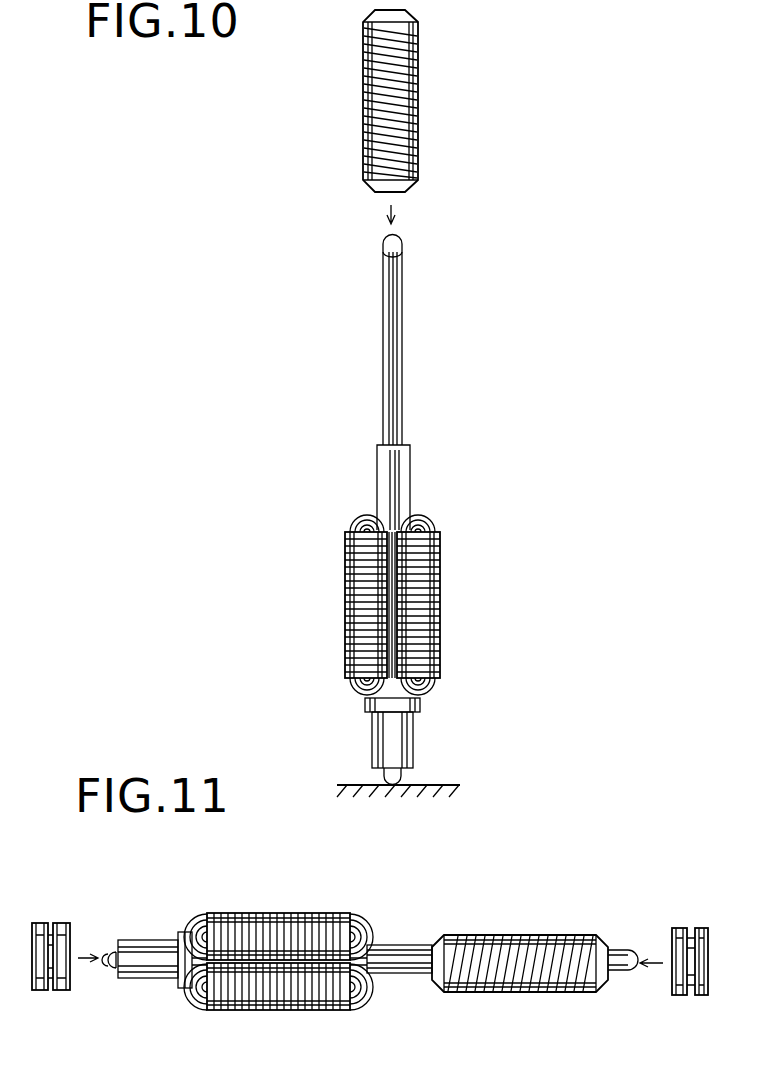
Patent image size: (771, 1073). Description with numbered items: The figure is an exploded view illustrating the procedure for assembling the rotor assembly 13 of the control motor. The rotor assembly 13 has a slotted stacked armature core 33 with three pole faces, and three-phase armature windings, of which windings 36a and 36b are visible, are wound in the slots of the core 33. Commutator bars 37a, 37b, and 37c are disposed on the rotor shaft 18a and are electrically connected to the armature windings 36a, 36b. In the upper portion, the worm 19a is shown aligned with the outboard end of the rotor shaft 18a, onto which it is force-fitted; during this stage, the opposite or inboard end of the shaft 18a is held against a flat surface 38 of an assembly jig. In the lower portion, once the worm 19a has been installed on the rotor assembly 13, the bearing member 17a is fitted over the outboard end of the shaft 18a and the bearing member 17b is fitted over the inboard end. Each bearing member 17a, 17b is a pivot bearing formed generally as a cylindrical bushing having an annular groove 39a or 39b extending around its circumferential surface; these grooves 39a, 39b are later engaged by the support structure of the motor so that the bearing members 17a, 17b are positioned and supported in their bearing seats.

In FIG. 10, the worm 19a is at (420, 92).
In FIG. 11, the worm 19a is at (520, 963).
In FIG. 10, the rotor shaft 18a is at (400, 345).
In FIG. 11, the rotor shaft 18a is at (623, 960).
In FIG. 10, the rotor assembly 13 is at (428, 496).
In FIG. 11, the rotor assembly 13 is at (412, 928).
In FIG. 10, the armature winding 36a is at (432, 520).
In FIG. 11, the armature winding 36a is at (362, 930).
In FIG. 10, the armature winding 36b is at (352, 520).
In FIG. 11, the armature winding 36b is at (362, 1003).
In FIG. 10, the armature core 33 is at (392, 613).
In FIG. 11, the armature core 33 is at (268, 913).
In FIG. 10, the commutator bar 37a is at (410, 725).
In FIG. 11, the commutator bar 37a is at (132, 978).
In FIG. 10, the commutator bar 37b is at (395, 757).
In FIG. 11, the commutator bar 37b is at (133, 958).
In FIG. 10, the commutator bar 37c is at (372, 725).
In FIG. 11, the commutator bar 37c is at (156, 940).
In FIG. 10, the flat surface 38 is at (360, 785).
In FIG. 11, the bearing member 17a is at (676, 935).
In FIG. 11, the bearing member 17b is at (62, 925).
In FIG. 11, the annular groove 39a is at (692, 995).
In FIG. 11, the annular groove 39b is at (50, 990).